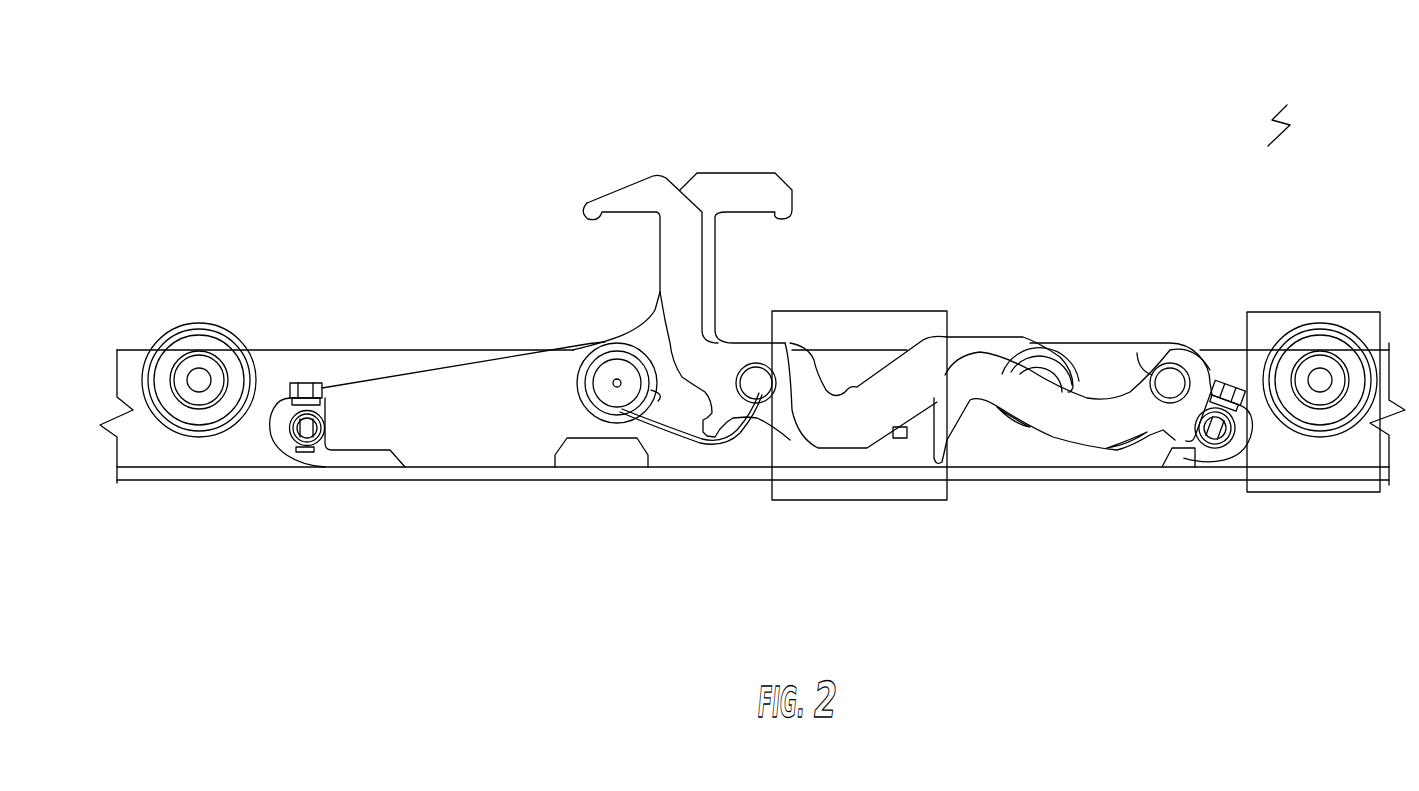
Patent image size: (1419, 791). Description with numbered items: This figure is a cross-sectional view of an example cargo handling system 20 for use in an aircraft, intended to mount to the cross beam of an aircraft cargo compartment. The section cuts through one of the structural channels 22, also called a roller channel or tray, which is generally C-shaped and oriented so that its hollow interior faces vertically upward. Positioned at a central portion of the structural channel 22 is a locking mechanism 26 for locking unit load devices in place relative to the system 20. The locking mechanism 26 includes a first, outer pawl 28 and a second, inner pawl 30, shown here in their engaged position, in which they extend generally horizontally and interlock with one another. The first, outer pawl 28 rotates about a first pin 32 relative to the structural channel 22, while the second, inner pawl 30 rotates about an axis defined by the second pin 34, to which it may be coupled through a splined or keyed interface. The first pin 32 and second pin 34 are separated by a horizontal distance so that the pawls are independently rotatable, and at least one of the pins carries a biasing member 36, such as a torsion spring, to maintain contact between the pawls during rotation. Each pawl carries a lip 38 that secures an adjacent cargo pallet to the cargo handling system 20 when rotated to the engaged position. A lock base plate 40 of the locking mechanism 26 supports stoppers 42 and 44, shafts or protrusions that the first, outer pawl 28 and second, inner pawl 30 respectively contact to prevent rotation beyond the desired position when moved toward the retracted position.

The cargo handling system 20 is at (1262, 140).
The structural channel 22 is at (252, 438).
The locking mechanism 26 is at (729, 135).
The first, outer pawl 28 is at (668, 257).
The second, inner pawl 30 is at (707, 240).
The first pin 32 is at (756, 392).
The second pin 34 is at (617, 388).
The biasing member 36 is at (618, 412).
The lip 38 is at (582, 216).
The lock base plate 40 is at (1100, 357).
The stopper 42 is at (1213, 432).
The stopper 44 is at (900, 440).